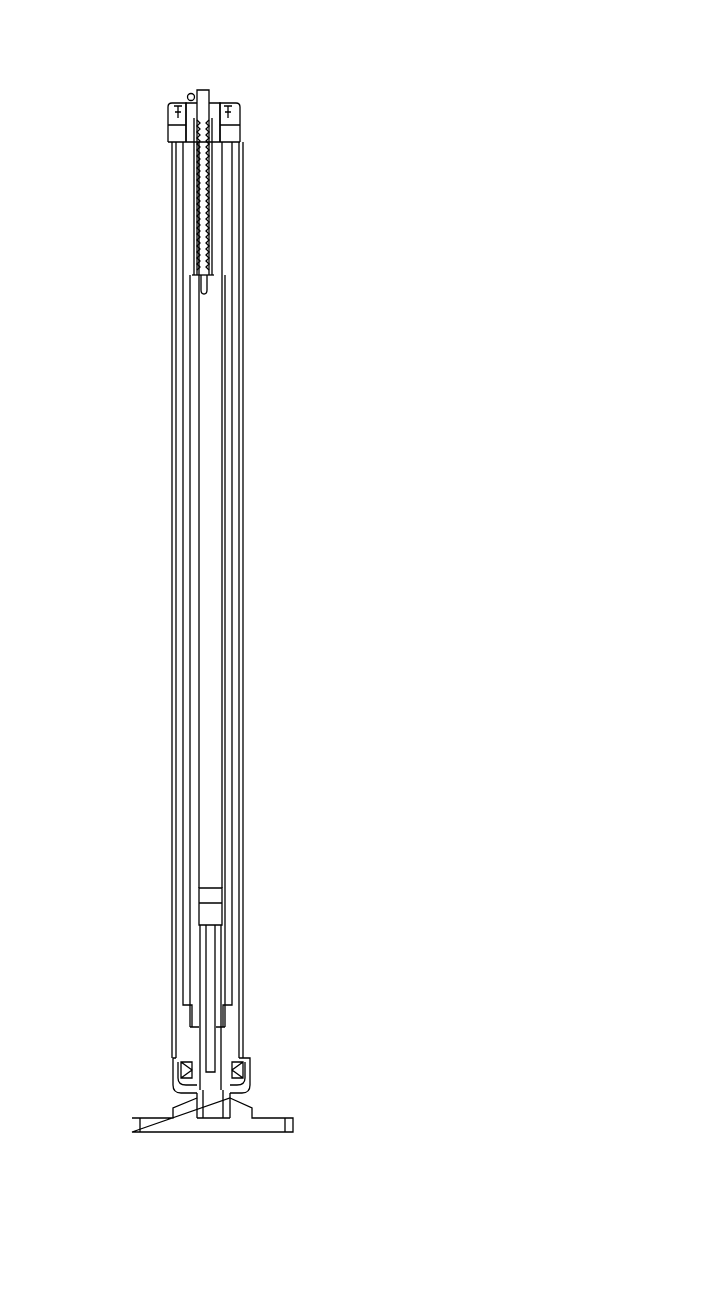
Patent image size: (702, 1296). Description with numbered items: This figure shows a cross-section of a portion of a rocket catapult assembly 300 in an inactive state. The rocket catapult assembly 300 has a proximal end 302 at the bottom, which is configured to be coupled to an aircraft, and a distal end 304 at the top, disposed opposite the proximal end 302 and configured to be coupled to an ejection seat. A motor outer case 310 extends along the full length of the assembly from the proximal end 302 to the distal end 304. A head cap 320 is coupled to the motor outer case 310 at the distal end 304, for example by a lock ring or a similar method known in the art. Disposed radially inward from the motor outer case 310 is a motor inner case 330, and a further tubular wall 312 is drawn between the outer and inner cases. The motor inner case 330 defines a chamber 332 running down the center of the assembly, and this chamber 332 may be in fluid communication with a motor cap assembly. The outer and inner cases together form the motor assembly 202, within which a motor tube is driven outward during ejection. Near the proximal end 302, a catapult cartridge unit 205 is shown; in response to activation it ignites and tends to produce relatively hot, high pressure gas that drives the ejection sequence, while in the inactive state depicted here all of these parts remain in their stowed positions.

The rocket catapult assembly 300 is at (268, 78).
The motor assembly 202 is at (171, 277).
The distal end 304 is at (188, 133).
The head cap 320 is at (187, 124).
The motor outer case 310 is at (172, 205).
The inner tube 312 is at (176, 180).
The motor inner case 330 is at (192, 340).
The chamber 332 is at (203, 400).
The catapult cartridge unit 205 is at (208, 1020).
The proximal end 302 is at (248, 1113).